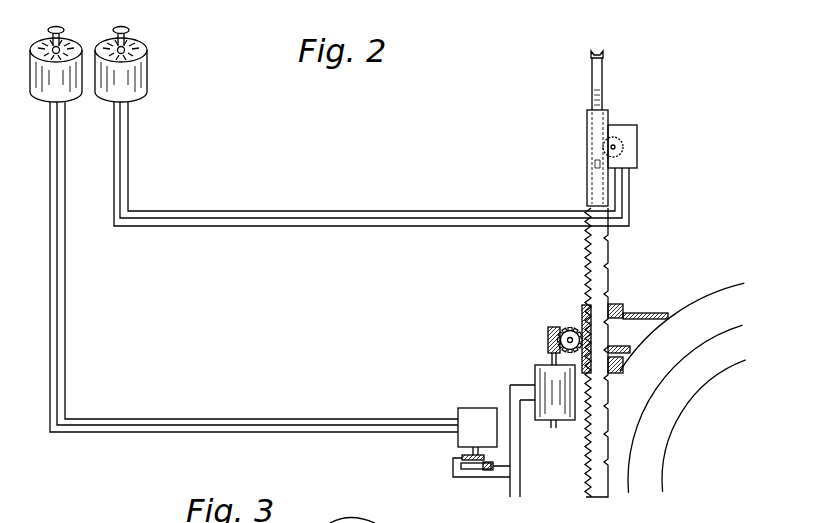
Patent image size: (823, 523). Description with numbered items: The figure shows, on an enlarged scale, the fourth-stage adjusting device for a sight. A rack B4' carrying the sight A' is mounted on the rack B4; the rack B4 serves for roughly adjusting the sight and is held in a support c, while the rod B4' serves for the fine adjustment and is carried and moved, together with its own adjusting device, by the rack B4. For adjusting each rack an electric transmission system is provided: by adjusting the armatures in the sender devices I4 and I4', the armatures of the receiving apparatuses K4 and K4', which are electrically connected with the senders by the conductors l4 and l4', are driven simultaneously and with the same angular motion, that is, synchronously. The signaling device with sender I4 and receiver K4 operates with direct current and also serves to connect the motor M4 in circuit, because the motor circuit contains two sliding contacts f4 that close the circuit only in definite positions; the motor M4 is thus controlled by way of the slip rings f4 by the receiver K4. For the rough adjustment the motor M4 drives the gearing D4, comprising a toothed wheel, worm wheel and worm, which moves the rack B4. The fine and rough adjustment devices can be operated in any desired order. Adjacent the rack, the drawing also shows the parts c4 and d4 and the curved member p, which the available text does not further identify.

The sender device I4 is at (48, 60).
The sender device I4' is at (130, 59).
The conductors l4 is at (254, 268).
The conductors l4' is at (371, 166).
The sight A' is at (616, 51).
The rack B4' is at (617, 132).
The receiving apparatus K4' is at (646, 146).
The rack B4 is at (619, 352).
The gearing D4 is at (548, 338).
The motor M4 is at (556, 410).
The receiver K4 is at (448, 445).
The sliding contacts f4 is at (471, 466).
The support c is at (651, 320).
The contact c4 is at (618, 348).
The drum p is at (683, 349).
The guide d4 is at (608, 437).